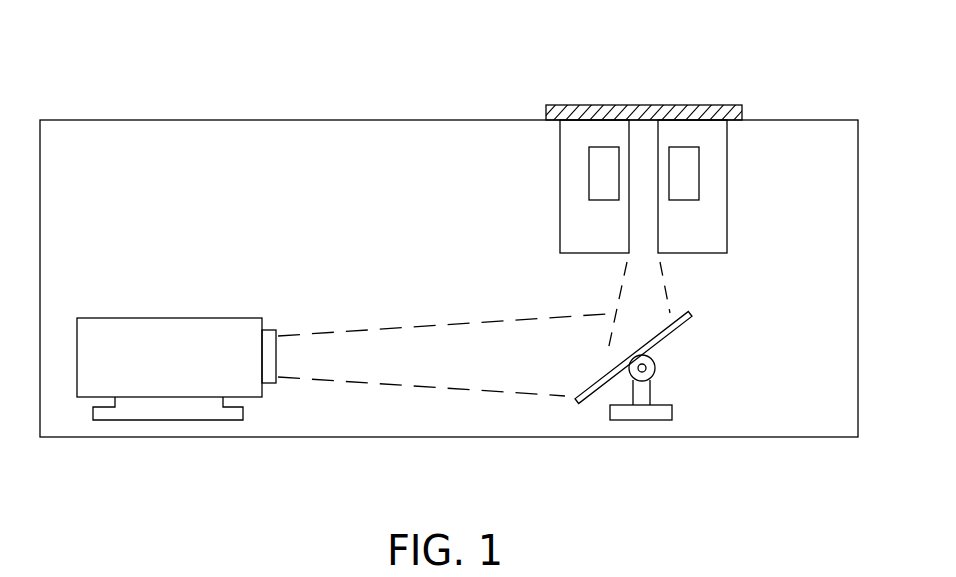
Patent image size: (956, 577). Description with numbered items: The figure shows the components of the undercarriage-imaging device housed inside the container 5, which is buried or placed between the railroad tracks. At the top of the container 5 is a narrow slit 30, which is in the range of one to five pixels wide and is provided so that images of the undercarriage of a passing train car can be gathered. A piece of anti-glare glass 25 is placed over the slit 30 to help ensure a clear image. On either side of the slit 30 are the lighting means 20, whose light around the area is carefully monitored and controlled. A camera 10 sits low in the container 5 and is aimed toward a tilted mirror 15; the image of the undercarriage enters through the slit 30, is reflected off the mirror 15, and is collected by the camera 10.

The container 5 is at (148, 120).
The camera 10 is at (152, 377).
The mirror 15 is at (675, 335).
The lighting means 20 is at (608, 166).
The anti-glare glass 25 is at (682, 107).
The slit 30 is at (638, 135).